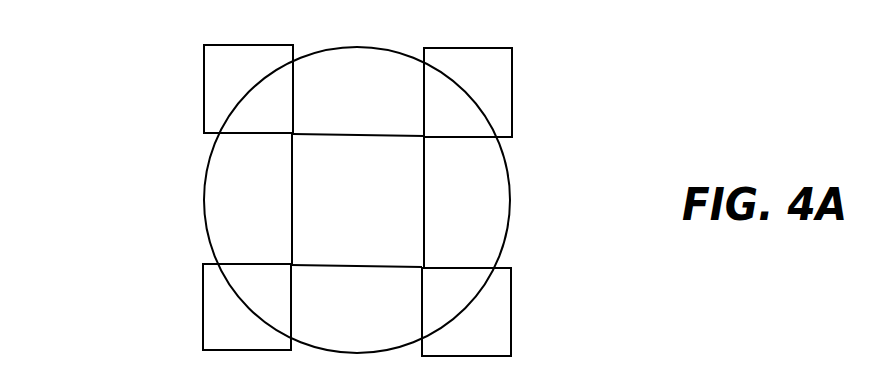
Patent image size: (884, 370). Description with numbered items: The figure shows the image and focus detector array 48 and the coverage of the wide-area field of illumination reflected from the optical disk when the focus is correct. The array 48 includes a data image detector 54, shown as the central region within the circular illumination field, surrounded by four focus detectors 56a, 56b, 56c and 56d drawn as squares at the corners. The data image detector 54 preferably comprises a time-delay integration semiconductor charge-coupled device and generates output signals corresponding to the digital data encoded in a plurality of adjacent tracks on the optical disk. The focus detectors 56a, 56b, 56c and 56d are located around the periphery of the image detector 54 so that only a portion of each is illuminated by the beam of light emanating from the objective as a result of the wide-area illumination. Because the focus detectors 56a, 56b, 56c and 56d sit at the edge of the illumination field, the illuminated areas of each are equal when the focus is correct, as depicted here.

The image and focus detector array 48 is at (114, 128).
The data image detector 54 is at (370, 224).
The focus detector 56a is at (205, 45).
The focus detector 56b is at (512, 72).
The focus detector 56c is at (511, 327).
The focus detector 56d is at (203, 288).